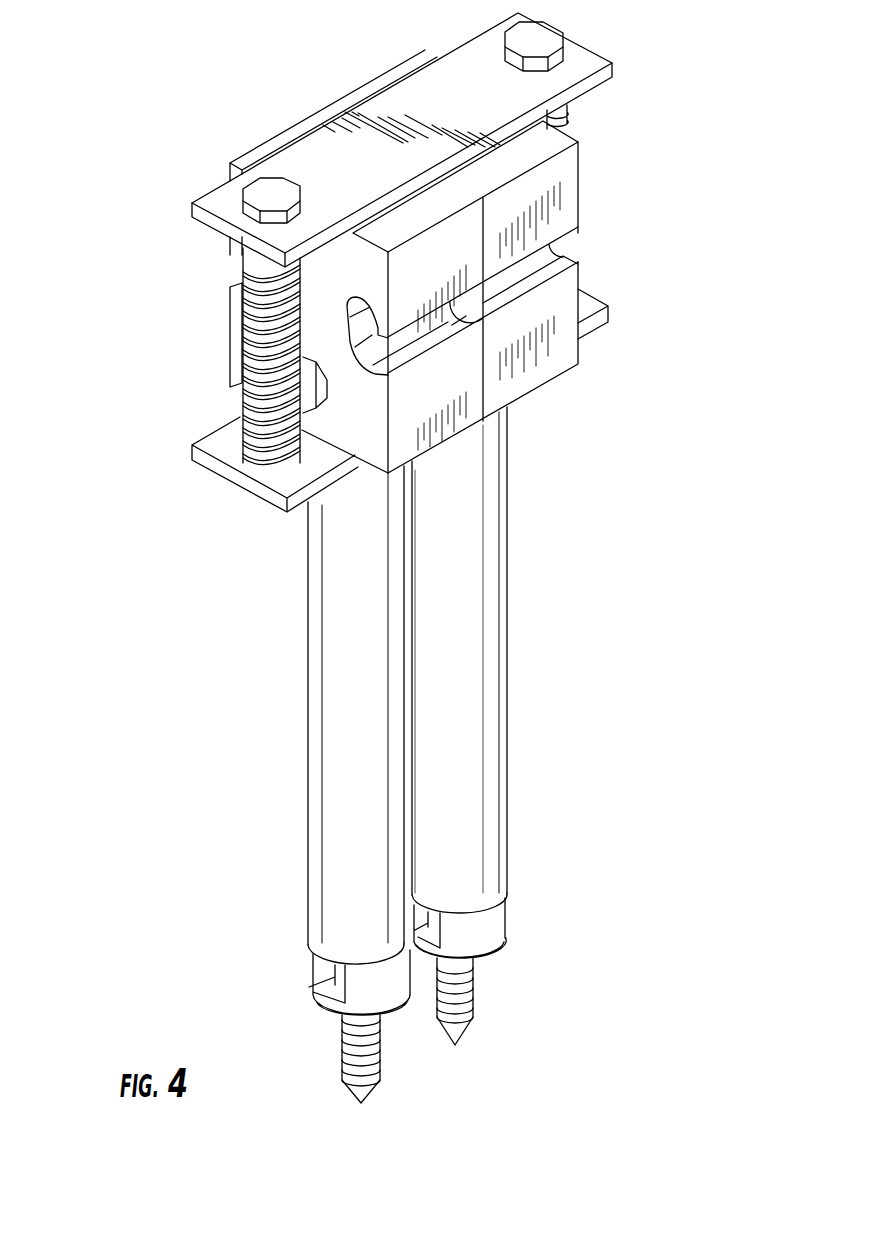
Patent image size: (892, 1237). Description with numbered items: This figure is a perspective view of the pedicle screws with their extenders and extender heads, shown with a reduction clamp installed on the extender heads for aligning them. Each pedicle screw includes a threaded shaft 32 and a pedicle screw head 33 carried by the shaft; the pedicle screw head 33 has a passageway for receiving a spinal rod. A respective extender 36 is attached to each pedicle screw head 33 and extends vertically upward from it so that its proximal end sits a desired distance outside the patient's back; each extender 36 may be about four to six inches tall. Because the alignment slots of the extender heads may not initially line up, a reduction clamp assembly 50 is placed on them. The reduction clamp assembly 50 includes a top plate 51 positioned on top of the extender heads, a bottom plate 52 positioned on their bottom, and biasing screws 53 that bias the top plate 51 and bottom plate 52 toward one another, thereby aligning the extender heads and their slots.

The reduction clamp assembly 50 is at (311, 89).
The top plate 51 is at (218, 197).
The bottom plate 52 is at (233, 471).
The biasing screws 53 is at (230, 363).
The extender 36 is at (288, 665).
The pedicle screw head 33 is at (308, 960).
The threaded shaft 32 is at (342, 1066).